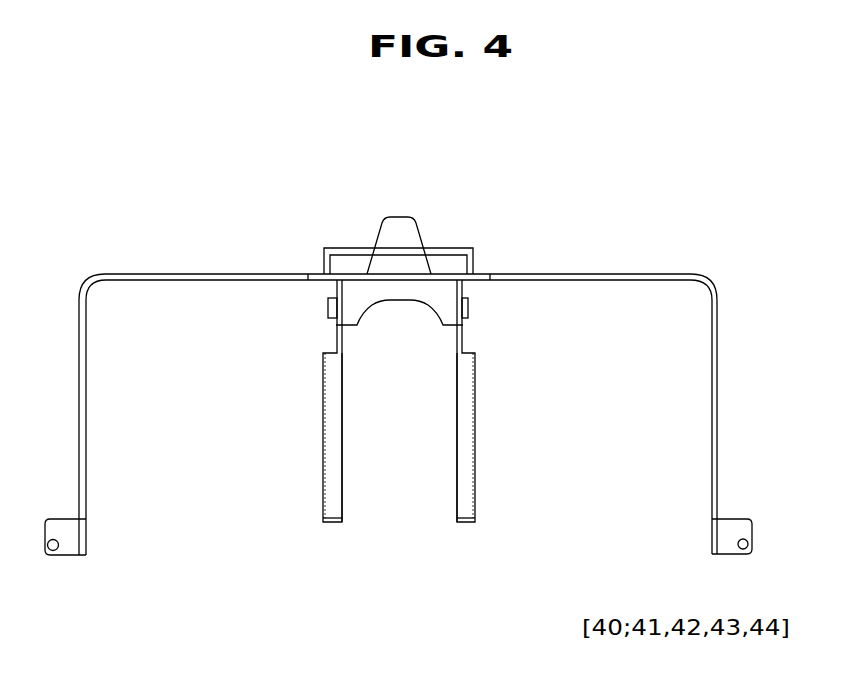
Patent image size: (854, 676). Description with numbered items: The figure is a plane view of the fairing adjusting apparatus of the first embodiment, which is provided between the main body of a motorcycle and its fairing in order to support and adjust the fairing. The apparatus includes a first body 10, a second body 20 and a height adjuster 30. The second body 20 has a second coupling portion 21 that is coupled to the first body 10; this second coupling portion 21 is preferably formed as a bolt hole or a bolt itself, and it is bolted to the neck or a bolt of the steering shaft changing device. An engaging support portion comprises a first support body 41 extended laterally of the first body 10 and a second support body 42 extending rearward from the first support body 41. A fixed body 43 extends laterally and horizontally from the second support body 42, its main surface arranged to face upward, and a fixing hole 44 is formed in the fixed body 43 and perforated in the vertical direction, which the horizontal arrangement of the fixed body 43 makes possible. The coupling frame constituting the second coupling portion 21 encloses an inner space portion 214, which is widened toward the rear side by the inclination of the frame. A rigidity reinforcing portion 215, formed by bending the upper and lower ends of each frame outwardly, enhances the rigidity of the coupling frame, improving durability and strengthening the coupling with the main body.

The first body 10 is at (441, 226).
The second body 20 is at (434, 443).
The second coupling portion 21 is at (337, 343).
The height adjuster 30 is at (468, 303).
The first support body 41 is at (612, 275).
The second support body 42 is at (717, 347).
The fixed body 43 is at (727, 525).
The fixing hole 44 is at (748, 544).
The space portion 214 is at (421, 425).
The rigidity reinforcing portion 215 is at (468, 464).